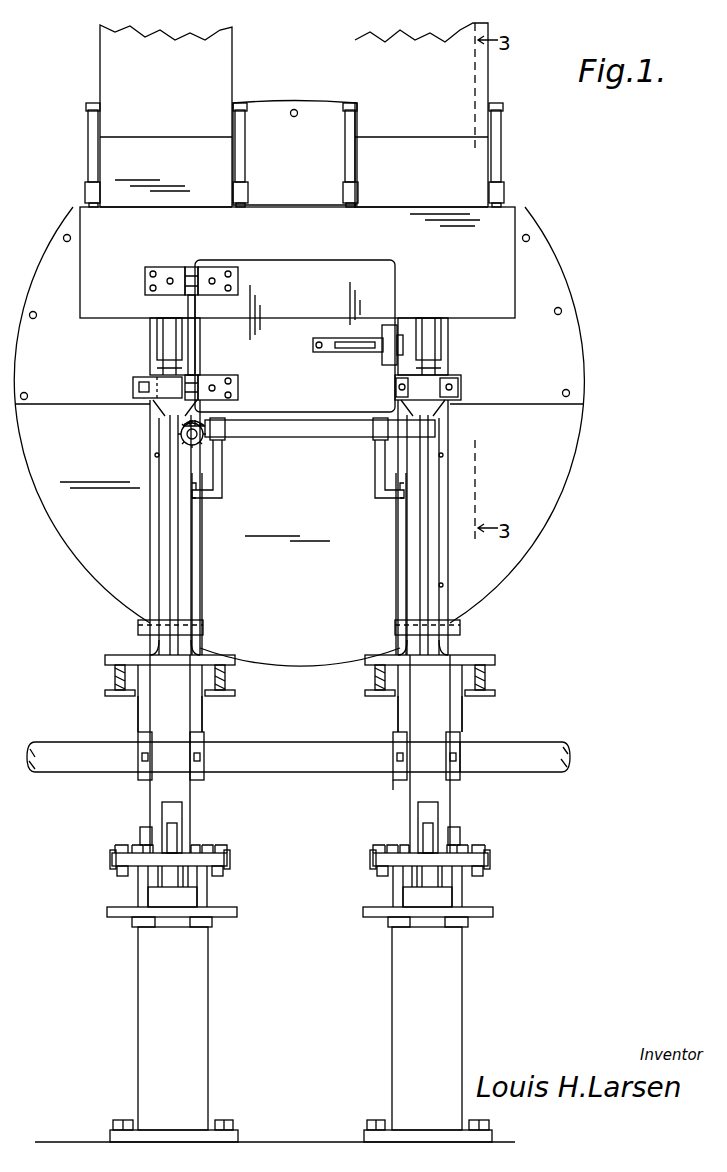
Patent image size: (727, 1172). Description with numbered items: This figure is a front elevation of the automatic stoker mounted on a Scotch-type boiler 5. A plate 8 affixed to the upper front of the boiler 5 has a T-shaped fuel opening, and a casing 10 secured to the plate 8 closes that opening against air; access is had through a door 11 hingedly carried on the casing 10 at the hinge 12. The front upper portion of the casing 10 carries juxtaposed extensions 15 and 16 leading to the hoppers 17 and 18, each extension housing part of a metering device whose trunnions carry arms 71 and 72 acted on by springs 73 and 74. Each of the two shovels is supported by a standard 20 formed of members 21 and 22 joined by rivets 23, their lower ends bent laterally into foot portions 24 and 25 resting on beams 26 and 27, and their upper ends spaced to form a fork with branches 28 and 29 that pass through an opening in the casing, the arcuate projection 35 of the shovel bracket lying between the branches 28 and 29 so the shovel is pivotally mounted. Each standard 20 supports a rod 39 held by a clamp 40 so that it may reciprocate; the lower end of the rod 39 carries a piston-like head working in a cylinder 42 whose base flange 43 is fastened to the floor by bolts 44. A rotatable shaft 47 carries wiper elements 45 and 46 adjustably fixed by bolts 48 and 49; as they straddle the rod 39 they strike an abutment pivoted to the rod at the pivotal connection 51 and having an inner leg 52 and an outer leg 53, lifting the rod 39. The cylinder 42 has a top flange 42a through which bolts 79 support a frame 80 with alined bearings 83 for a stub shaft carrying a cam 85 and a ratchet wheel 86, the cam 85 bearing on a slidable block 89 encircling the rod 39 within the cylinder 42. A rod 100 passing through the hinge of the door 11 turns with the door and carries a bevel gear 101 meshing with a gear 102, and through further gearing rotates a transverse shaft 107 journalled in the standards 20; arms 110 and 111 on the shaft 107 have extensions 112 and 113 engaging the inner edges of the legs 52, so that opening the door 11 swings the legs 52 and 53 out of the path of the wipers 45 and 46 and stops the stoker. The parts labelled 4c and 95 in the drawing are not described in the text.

The boiler 5 is at (575, 483).
The plate 8 is at (568, 345).
The casing 10 is at (520, 265).
The door 11 is at (297, 262).
The hinge 12 is at (225, 355).
The extension 15 is at (421, 155).
The extension 16 is at (166, 172).
The hopper 17 is at (488, 72).
The hopper 18 is at (113, 58).
The standard 20 is at (150, 537).
The member 21 is at (418, 550).
The member 22 is at (430, 558).
The rivets 23 is at (462, 585).
The foot portion 24 is at (388, 657).
The foot portion 25 is at (490, 655).
The beam 26 is at (330, 700).
The beam 27 is at (518, 680).
The branch 28 is at (412, 292).
The branch 29 is at (478, 340).
The arcuately shaped projection 35 is at (488, 358).
The rod 39 is at (220, 795).
The clamp 40 is at (133, 390).
The clamp bracket 4c is at (461, 387).
The cylinder 42 is at (495, 998).
The top flange 42a is at (520, 912).
The base flange 43 is at (238, 1133).
The bolts 44 is at (370, 1093).
The wiper element 45 is at (204, 752).
The wiper element 46 is at (482, 798).
The rotatable shaft 47 is at (560, 745).
The bolt 48 is at (393, 757).
The bolt 49 is at (460, 757).
The pivotal connection 51 is at (480, 627).
The inner leg 52 is at (383, 598).
The outer leg 53 is at (488, 712).
The arm 71 is at (532, 144).
The arm 72 is at (330, 152).
The spring 73 is at (503, 107).
The spring 74 is at (345, 102).
The bolts 79 is at (362, 885).
The frame 80 is at (528, 860).
The bearings 83 is at (350, 850).
The cam 85 is at (380, 825).
The ratchet wheel 86 is at (510, 835).
The slidable block 89 is at (495, 888).
The pin 95 is at (400, 780).
The rod 100 is at (195, 305).
The bevel gear 101 is at (205, 425).
The gear 102 is at (205, 440).
The transverse shaft 107 is at (323, 432).
The arm 110 is at (225, 472).
The arm 111 is at (378, 472).
The extension 112 is at (192, 497).
The extension 113 is at (392, 498).